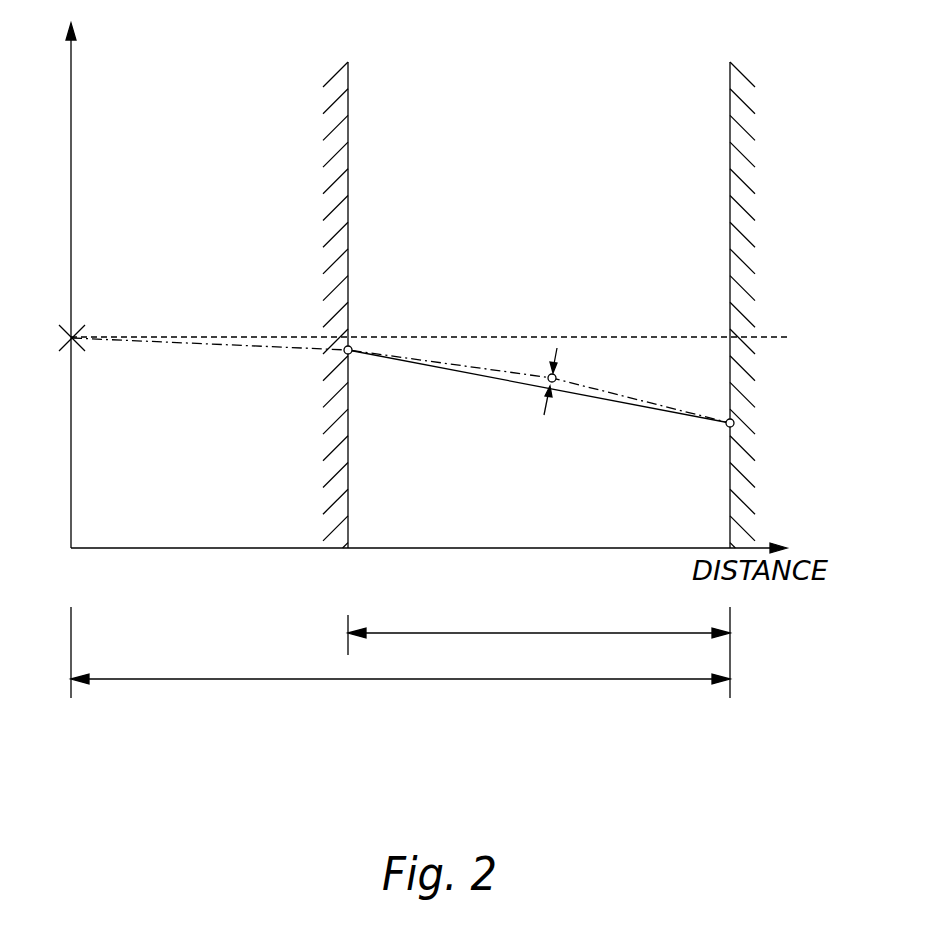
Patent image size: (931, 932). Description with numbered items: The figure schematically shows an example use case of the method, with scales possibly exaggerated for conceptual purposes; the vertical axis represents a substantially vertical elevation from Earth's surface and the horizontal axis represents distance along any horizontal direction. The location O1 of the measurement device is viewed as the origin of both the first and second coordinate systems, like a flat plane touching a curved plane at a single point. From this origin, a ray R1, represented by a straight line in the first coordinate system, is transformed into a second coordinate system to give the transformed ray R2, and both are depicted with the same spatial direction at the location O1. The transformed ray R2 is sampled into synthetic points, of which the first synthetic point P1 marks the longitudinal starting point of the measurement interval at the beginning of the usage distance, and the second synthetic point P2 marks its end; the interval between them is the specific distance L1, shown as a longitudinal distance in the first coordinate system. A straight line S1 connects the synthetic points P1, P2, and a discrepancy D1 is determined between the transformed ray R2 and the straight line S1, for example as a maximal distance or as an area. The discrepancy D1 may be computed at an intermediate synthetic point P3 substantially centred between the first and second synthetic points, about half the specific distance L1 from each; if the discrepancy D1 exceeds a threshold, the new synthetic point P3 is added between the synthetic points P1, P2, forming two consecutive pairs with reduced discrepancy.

The location of the measurement device O1 is at (79, 316).
The first synthetic point P1 is at (352, 345).
The second synthetic point P2 is at (737, 424).
The intermediate synthetic point P3 is at (557, 382).
The ray R1 is at (573, 336).
The transformed ray R2 is at (493, 366).
The straight line S1 is at (515, 382).
The discrepancy D1 is at (556, 352).
The specific distance L1 is at (573, 632).